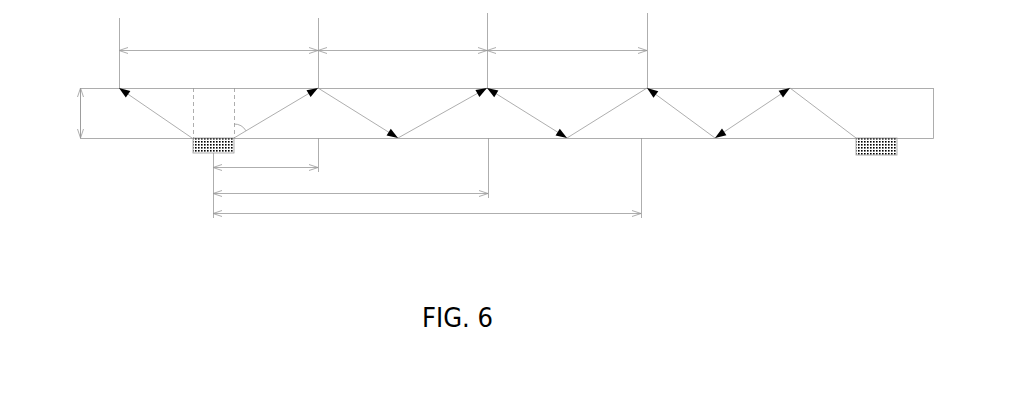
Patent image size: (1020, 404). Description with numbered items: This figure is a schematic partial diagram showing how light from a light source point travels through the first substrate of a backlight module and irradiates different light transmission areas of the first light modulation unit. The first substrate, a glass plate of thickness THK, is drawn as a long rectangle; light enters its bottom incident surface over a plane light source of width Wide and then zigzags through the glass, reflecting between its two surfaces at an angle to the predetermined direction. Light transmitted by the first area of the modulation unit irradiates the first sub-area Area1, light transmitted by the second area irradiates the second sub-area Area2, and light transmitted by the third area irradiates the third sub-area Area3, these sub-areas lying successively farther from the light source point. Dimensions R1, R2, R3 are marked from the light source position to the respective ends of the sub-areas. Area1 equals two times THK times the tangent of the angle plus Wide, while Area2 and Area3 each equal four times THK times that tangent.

The thickness of the first substrate THK is at (50, 113).
The first sub-area Area1 is at (219, 53).
The second sub-area Area2 is at (403, 50).
The third sub-area Area3 is at (567, 50).
The first reflection distance R1 is at (266, 178).
The second reflection distance R2 is at (351, 168).
The third reflection distance R3 is at (427, 178).
The width of the plane light source Wide is at (898, 155).